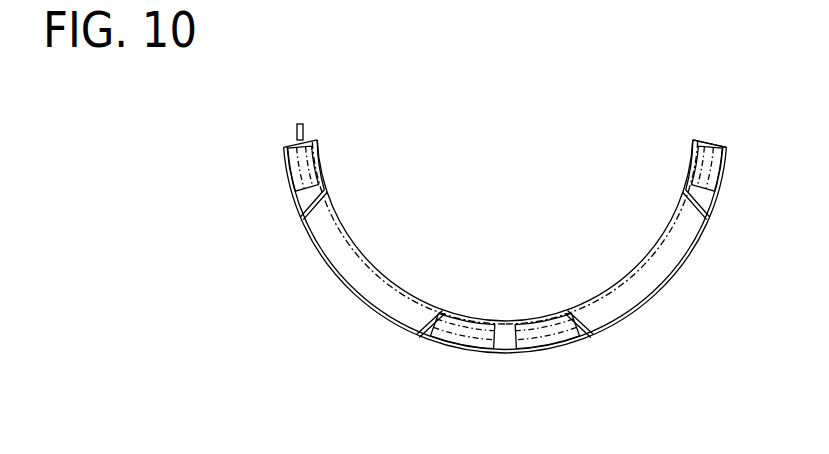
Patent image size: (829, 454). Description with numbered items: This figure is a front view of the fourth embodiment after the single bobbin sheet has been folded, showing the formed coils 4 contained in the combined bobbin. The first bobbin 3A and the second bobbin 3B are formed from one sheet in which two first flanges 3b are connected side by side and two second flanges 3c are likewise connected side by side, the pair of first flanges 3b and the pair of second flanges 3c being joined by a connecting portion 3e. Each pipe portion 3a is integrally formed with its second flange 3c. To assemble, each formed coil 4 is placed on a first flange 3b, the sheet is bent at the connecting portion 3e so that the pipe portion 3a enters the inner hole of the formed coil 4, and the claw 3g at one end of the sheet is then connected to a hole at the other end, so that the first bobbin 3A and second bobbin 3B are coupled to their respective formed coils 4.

The first bobbin 3A is at (667, 295).
The second bobbin 3B is at (360, 311).
The pipe portion 3a is at (328, 212).
The first flange 3b is at (552, 357).
The second flange 3c is at (322, 178).
The connecting portion 3e is at (712, 141).
The claw 3g is at (297, 136).
The formed coil 4 is at (292, 180).